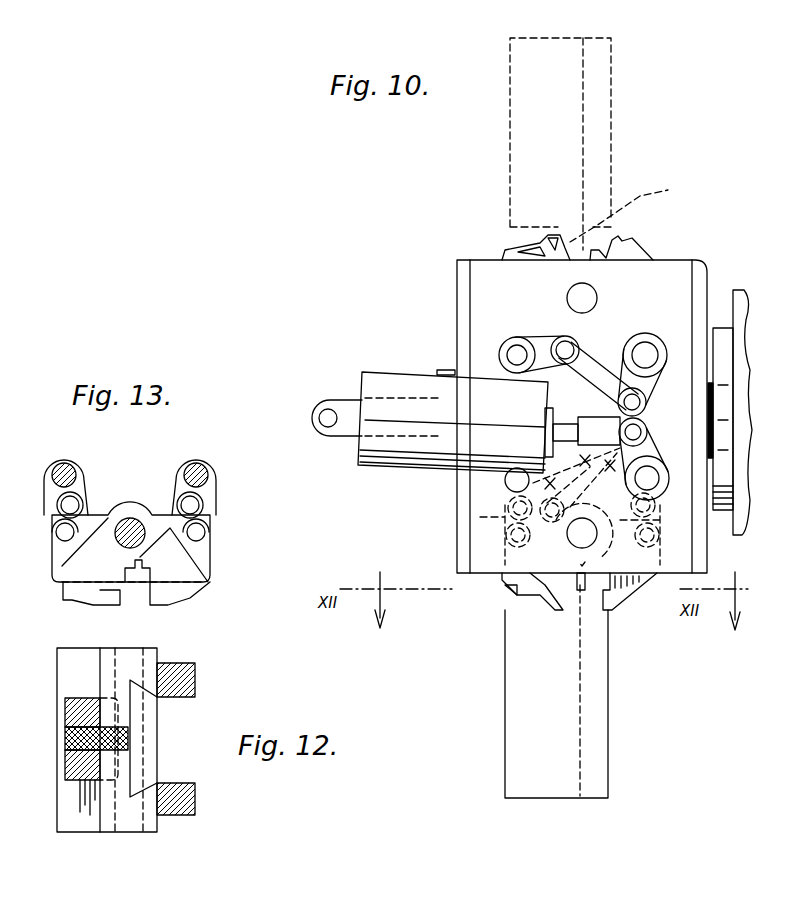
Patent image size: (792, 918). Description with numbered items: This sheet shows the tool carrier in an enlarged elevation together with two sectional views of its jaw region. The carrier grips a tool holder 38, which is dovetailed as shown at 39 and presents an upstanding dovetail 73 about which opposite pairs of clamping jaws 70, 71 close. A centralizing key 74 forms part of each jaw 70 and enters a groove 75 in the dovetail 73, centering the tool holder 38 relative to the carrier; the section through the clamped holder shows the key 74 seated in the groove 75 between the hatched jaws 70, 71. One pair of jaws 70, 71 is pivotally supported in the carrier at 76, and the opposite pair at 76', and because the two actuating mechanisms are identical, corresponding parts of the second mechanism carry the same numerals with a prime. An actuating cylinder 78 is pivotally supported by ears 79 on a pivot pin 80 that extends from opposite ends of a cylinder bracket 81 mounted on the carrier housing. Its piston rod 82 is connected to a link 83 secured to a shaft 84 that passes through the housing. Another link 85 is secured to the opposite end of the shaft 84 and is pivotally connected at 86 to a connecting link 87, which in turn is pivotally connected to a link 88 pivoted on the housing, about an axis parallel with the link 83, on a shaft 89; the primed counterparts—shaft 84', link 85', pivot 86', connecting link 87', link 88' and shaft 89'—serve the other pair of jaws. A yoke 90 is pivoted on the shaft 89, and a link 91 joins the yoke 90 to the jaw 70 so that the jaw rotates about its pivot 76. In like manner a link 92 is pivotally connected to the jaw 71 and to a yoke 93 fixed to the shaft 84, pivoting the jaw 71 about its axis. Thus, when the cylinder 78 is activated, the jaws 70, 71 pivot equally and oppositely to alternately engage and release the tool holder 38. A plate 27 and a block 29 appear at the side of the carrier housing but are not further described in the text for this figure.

In FIG. 10, the frame plate 27 is at (726, 295).
In FIG. 10, the guide block 29 is at (710, 410).
In FIG. 10, the tool holder 38 is at (520, 134).
In FIG. 12, the tool holder 38 is at (68, 658).
In FIG. 12, the dovetail 39 is at (140, 693).
In FIG. 10, the clamping jaw 70 is at (532, 243).
In FIG. 13, the clamping jaw 70 is at (75, 565).
In FIG. 12, the clamping jaw 70 is at (198, 672).
In FIG. 10, the clamping jaw 71 is at (625, 240).
In FIG. 13, the clamping jaw 71 is at (205, 580).
In FIG. 12, the clamping jaw 71 is at (198, 800).
In FIG. 10, the upstanding dovetail 73 is at (636, 660).
In FIG. 10, the centralizing key 74 is at (520, 250).
In FIG. 13, the centralizing key 74 is at (76, 600).
In FIG. 12, the groove 75 is at (130, 737).
In FIG. 10, the jaw pivot 76 is at (546, 534).
In FIG. 13, the jaw pivot 76 is at (130, 505).
In FIG. 10, the jaw pivot 76' is at (592, 288).
In FIG. 10, the actuating cylinder 78 is at (372, 466).
In FIG. 10, the ears 79 is at (345, 437).
In FIG. 10, the pivot pin 80 is at (332, 408).
In FIG. 10, the cylinder bracket 81 is at (446, 368).
In FIG. 10, the piston rod 82 is at (566, 420).
In FIG. 10, the link 83 is at (658, 438).
In FIG. 10, the shaft 84 is at (664, 517).
In FIG. 13, the shaft 84 is at (210, 474).
In FIG. 10, the shaft 84' is at (650, 328).
In FIG. 10, the link 85 is at (657, 460).
In FIG. 10, the link 85' is at (657, 357).
In FIG. 10, the pivotal connection 86 is at (599, 419).
In FIG. 10, the pivotal connection 86' is at (653, 394).
In FIG. 10, the connecting link 87 is at (576, 477).
In FIG. 10, the connecting link 87' is at (597, 360).
In FIG. 10, the link 88 is at (493, 496).
In FIG. 10, the link 88' is at (547, 331).
In FIG. 10, the shaft 89 is at (513, 447).
In FIG. 13, the shaft 89 is at (66, 467).
In FIG. 10, the shaft 89' is at (506, 339).
In FIG. 10, the yoke 90 is at (500, 498).
In FIG. 13, the yoke 90 is at (56, 502).
In FIG. 10, the link 91 is at (530, 512).
In FIG. 13, the link 91 is at (55, 527).
In FIG. 10, the link 92 is at (670, 532).
In FIG. 13, the link 92 is at (208, 518).
In FIG. 10, the yoke 93 is at (636, 497).
In FIG. 13, the yoke 93 is at (205, 500).